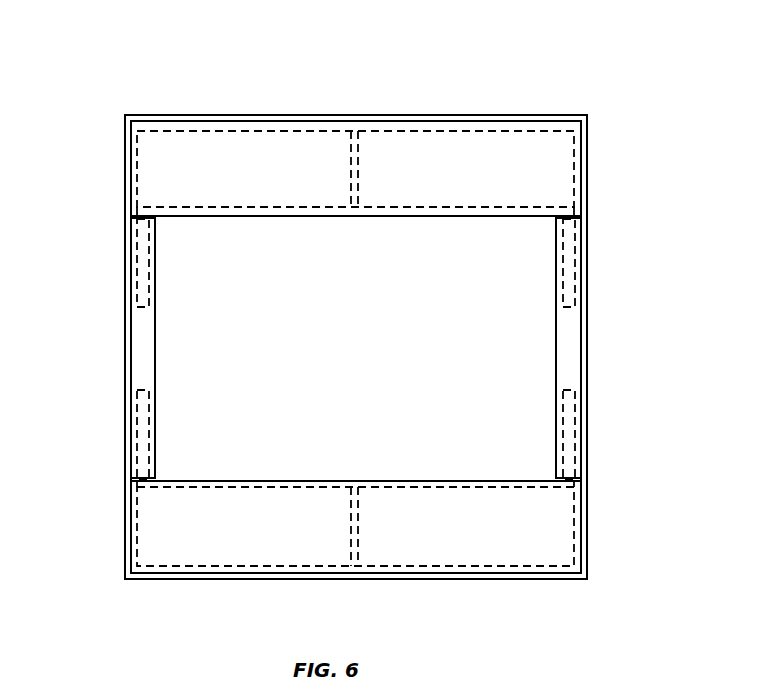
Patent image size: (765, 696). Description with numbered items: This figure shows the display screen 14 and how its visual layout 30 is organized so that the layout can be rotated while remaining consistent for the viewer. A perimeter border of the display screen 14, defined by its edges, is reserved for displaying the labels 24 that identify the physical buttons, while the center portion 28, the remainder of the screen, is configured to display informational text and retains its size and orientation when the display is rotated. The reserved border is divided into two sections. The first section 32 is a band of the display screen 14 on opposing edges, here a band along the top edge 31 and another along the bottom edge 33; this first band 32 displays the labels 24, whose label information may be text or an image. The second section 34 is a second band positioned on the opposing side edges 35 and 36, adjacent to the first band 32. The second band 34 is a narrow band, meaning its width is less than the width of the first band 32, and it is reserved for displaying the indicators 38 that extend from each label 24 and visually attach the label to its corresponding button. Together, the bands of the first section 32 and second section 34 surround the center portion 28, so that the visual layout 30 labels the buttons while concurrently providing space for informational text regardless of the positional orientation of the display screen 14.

The display screen 14 is at (535, 44).
The visual layout 30 is at (100, 84).
The top edge 31 is at (205, 115).
The bottom edge 33 is at (178, 578).
The side edge 35 is at (589, 192).
The side edge 36 is at (126, 517).
The first section 32 is at (125, 177).
The second section 34 is at (126, 348).
The labels 24 is at (293, 143).
The indicators 38 is at (144, 277).
The center portion 28 is at (510, 347).